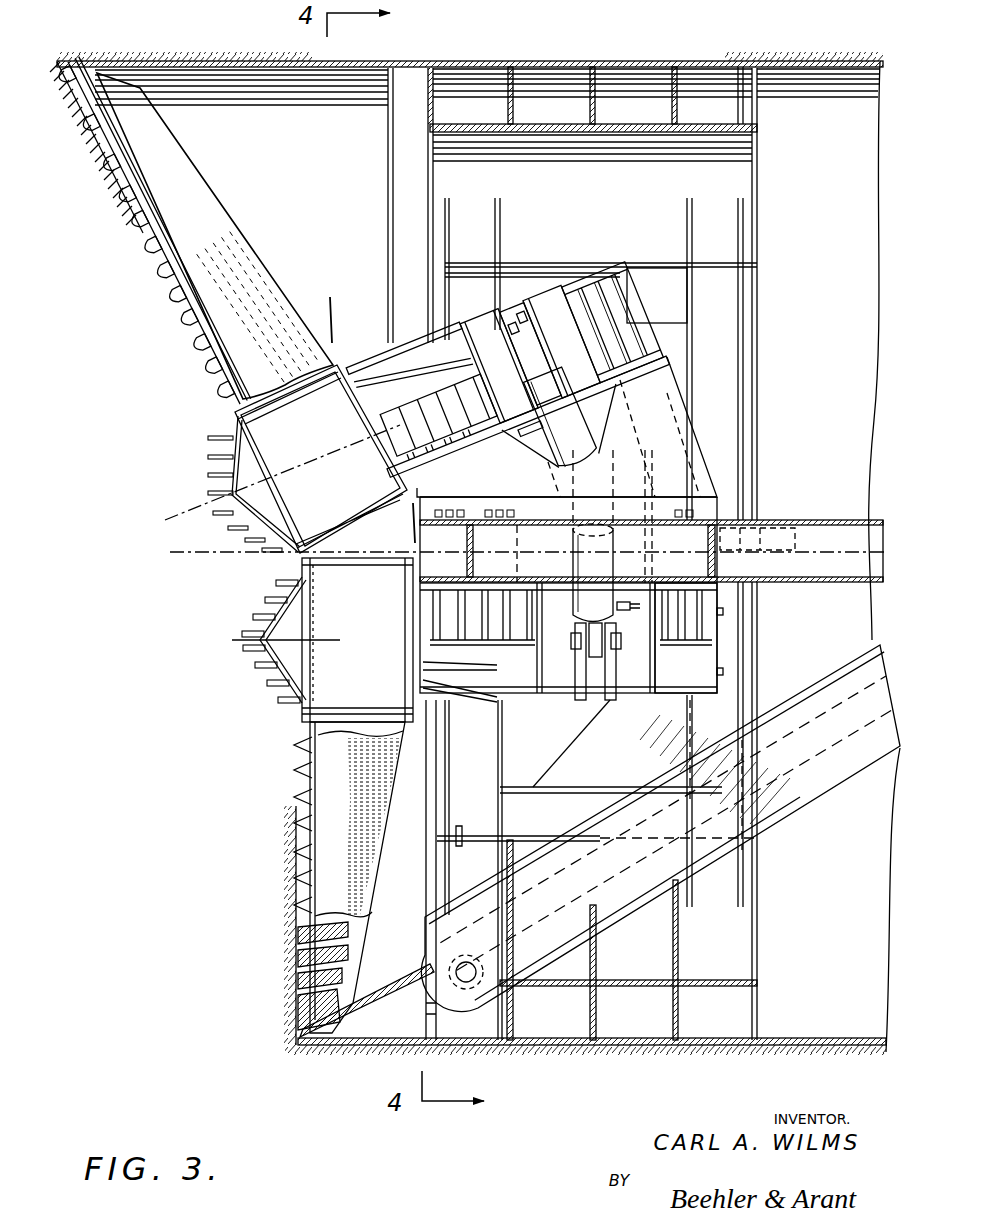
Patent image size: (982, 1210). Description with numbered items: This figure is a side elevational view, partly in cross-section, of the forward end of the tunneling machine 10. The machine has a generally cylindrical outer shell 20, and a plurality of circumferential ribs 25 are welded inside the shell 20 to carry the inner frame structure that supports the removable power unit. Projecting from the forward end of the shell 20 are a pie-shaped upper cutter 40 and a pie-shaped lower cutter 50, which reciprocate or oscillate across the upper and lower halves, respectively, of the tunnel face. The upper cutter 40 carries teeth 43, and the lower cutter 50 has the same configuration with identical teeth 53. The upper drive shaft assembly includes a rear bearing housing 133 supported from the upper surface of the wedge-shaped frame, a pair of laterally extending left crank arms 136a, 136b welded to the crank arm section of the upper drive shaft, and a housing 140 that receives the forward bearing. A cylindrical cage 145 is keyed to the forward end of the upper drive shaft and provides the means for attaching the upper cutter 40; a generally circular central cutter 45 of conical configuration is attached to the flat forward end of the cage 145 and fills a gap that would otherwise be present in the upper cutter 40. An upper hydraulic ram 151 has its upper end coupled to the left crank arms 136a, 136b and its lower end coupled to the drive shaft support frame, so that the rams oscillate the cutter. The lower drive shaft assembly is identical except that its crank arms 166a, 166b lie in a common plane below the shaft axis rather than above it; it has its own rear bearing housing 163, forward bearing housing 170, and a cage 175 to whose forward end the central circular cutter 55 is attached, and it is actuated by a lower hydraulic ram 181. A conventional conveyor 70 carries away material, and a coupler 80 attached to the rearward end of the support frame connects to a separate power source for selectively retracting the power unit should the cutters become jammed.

The tunneling machine 10 is at (158, 781).
The outer shell 20 is at (617, 63).
The circumferential ribs 25 is at (503, 178).
The upper cutter 40 is at (142, 268).
The teeth 43 is at (192, 312).
The central cutter 45 is at (220, 450).
The lower cutter 50 is at (333, 830).
The teeth 53 is at (297, 982).
The central circular cutter 55 is at (252, 671).
The conveyor 70 is at (828, 773).
The coupler 80 is at (750, 530).
The rear bearing housing 133 is at (608, 258).
The left crank arm 136a is at (500, 307).
The left crank arm 136b is at (538, 318).
The housing 140 is at (432, 352).
The cylindrical cage 145 is at (321, 459).
The upper hydraulic ram 151 is at (600, 432).
The rear bearing housing 163 is at (712, 650).
The crank arm 166a is at (583, 660).
The crank arm 166b is at (606, 660).
The housing 170 is at (520, 700).
The cage 175 is at (357, 640).
The lower hydraulic ram 181 is at (593, 590).